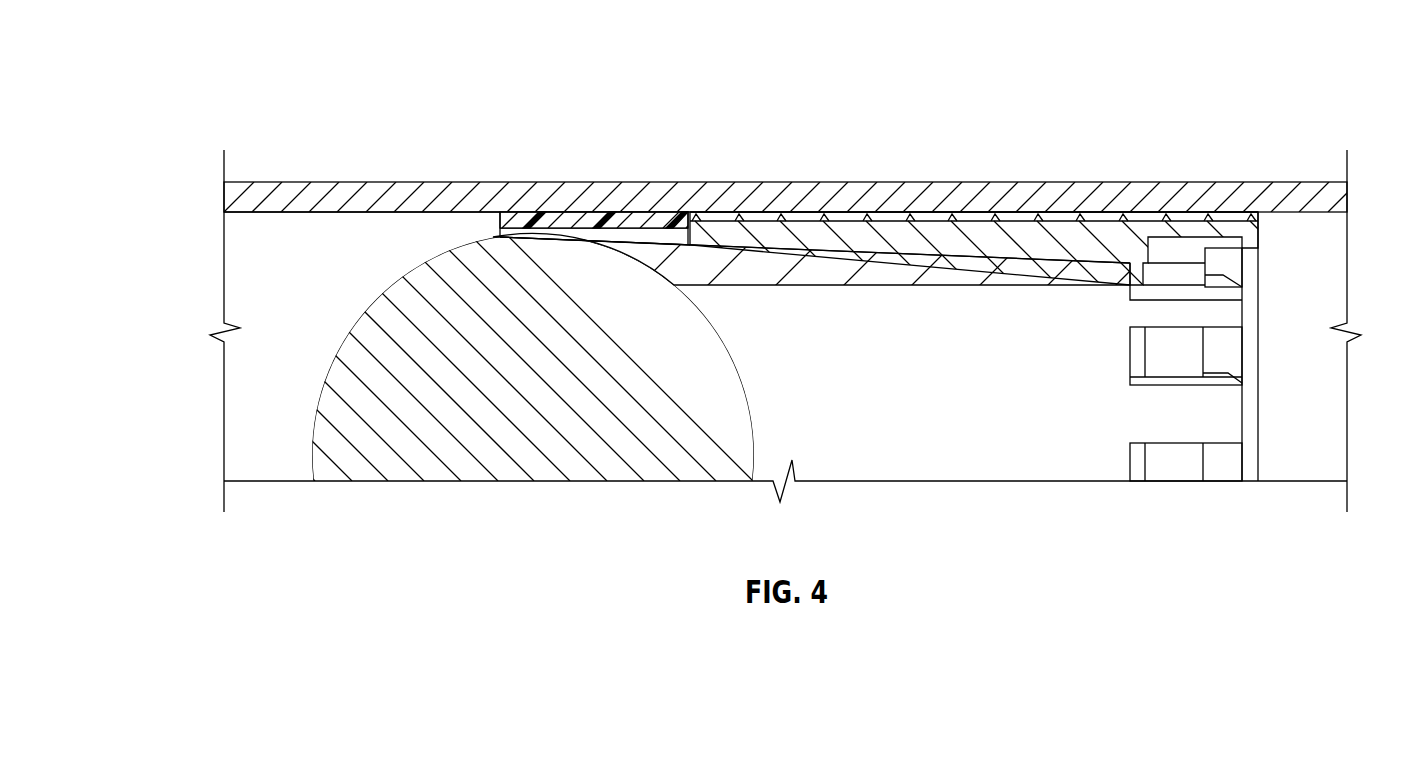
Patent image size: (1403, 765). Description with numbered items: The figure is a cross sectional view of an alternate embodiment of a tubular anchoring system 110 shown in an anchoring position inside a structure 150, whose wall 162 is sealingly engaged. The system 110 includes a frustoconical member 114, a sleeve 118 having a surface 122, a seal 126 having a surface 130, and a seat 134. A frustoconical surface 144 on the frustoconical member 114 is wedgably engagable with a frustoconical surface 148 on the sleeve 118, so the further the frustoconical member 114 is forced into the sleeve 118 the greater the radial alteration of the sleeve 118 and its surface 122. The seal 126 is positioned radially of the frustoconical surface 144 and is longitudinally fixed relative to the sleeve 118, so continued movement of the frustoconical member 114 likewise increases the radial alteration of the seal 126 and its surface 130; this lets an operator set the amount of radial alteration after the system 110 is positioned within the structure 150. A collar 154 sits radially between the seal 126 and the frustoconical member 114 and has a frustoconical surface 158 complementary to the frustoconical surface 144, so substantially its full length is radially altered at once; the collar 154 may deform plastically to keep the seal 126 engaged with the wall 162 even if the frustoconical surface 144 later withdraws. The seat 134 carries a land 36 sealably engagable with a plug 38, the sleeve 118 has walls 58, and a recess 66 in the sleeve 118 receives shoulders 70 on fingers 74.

The tubular anchoring system 110 is at (342, 42).
The structure 150 is at (346, 182).
The wall 162 is at (320, 214).
The plug 38 is at (357, 322).
The collar 154 is at (553, 226).
The seal 126 is at (600, 222).
The surface 130 is at (662, 204).
The frustoconical surface 158 is at (597, 245).
The land 36 is at (623, 247).
The seat 134 is at (833, 272).
The frustoconical surface 148 is at (975, 266).
The frustoconical member 114 is at (752, 243).
The frustoconical surface 144 is at (848, 240).
The surface 122 is at (1015, 221).
The sleeve 118 is at (1100, 221).
The recess 66 is at (1218, 250).
The walls 58 is at (1250, 249).
The shoulders 70 is at (1203, 375).
The fingers 74 is at (1195, 422).